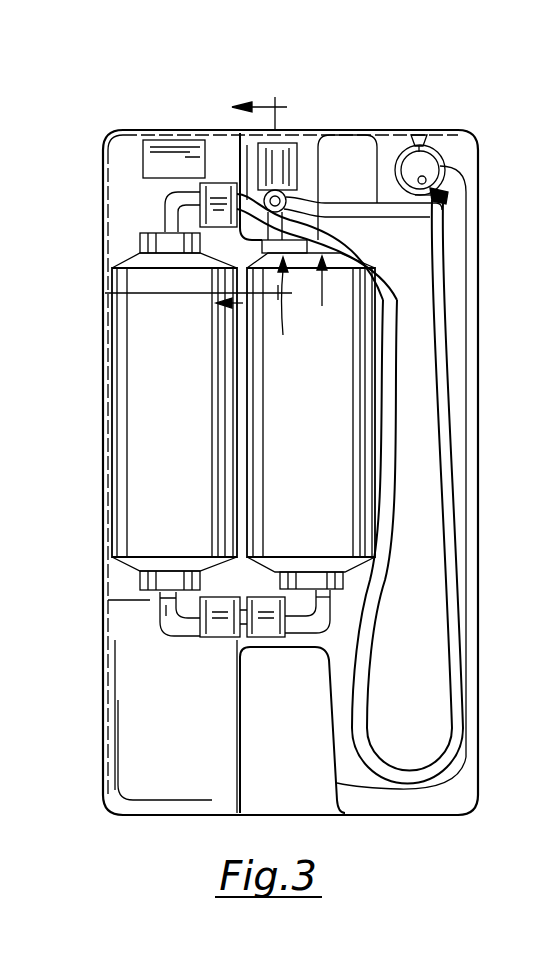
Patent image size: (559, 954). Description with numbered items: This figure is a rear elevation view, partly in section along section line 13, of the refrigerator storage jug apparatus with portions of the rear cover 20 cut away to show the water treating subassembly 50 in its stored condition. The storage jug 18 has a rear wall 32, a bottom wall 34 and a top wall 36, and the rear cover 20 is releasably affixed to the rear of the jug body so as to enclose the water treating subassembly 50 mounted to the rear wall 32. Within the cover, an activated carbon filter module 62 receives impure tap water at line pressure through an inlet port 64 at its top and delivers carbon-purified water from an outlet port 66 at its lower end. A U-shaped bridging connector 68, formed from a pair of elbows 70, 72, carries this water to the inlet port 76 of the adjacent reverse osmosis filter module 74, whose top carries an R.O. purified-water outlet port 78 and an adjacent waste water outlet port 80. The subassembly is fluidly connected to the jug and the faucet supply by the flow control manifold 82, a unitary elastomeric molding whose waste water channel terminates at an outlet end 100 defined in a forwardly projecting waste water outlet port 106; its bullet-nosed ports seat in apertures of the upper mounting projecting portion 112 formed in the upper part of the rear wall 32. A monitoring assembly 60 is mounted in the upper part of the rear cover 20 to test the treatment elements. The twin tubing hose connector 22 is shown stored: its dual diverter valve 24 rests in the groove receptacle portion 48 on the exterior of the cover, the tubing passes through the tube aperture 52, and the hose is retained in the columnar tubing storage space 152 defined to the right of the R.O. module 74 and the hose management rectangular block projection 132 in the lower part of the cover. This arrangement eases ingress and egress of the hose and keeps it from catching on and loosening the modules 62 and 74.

The section line 13- 13 is at (198, 205).
The storage jug 18 is at (130, 601).
The rear cover 20 is at (105, 220).
The twin tubing hose connector 22 is at (437, 337).
The dual diverter valve 24 is at (444, 170).
The rear wall 32 is at (125, 636).
The bottom wall 34 is at (157, 814).
The top wall 36 is at (450, 134).
The tubing adapter groove receptacle portion 48 is at (416, 134).
The water treating subassembly 50 is at (140, 460).
The tube aperture 52 is at (448, 205).
The monitoring assembly 60 is at (162, 134).
The activated carbon filter module 62 is at (152, 407).
The inlet port 64 is at (165, 230).
The carbon-purified water outlet port 66 is at (165, 598).
The U-shaped bridging connector 68 is at (220, 618).
The elbow 70 is at (196, 626).
The elbow 72 is at (273, 640).
The reverse osmosis filter module 74 is at (291, 407).
The inlet port 76 is at (322, 598).
The R.O. purified-water outlet port 78 is at (317, 264).
The waste water outlet port 80 is at (370, 520).
The flow control manifold 82 is at (298, 150).
The outlet end of waste water channel 100 is at (312, 165).
The waste water outlet port 106 is at (341, 193).
The upper mounting projecting portion 112 is at (262, 132).
The rectangular block projection 132 is at (290, 740).
The tubing storage columnar space 152 is at (424, 562).